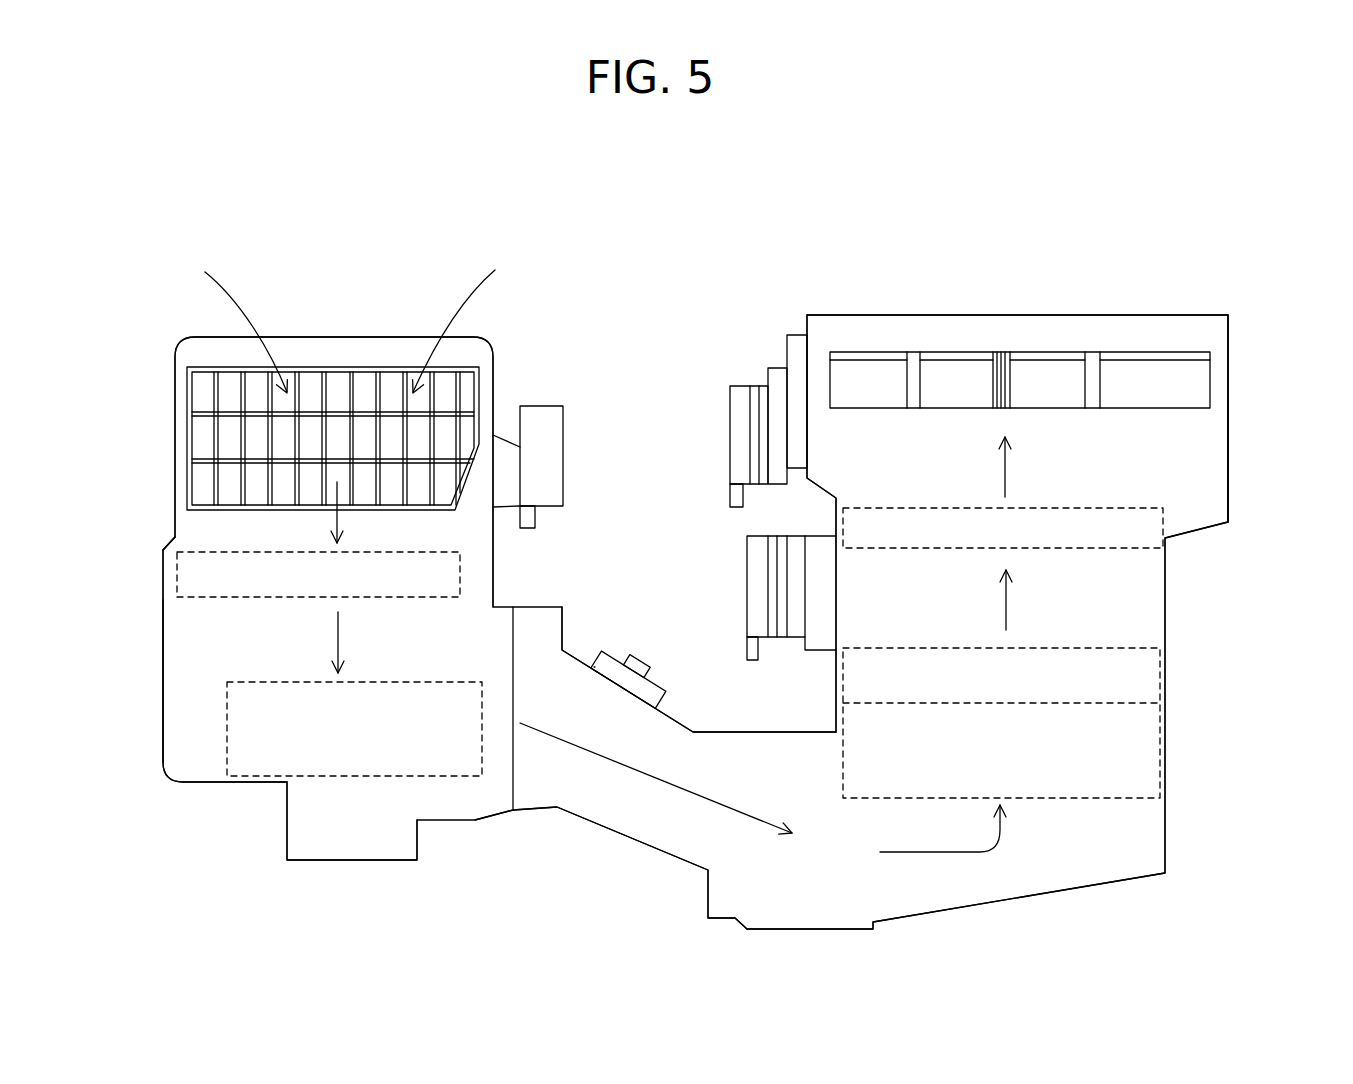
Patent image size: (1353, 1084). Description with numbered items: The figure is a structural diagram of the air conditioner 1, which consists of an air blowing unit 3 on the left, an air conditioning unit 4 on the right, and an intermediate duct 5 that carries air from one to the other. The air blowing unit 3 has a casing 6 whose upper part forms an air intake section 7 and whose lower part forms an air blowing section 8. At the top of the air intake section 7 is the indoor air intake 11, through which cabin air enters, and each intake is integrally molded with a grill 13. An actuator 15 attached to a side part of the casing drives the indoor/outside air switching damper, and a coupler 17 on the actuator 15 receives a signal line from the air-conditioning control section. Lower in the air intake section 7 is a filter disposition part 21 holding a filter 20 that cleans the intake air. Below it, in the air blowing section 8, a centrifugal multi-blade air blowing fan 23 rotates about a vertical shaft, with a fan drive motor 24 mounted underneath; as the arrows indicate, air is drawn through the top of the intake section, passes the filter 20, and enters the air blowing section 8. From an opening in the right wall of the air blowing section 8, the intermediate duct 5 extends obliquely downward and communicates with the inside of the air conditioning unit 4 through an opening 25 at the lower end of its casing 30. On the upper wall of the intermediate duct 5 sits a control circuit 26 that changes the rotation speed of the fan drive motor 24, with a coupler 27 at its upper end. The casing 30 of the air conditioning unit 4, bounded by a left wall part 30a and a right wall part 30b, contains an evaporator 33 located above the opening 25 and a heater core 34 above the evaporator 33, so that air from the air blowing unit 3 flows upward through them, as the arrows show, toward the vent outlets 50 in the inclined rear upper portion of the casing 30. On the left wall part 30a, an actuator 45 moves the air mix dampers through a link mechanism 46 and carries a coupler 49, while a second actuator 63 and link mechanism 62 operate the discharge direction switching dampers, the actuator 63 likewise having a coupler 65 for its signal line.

The air conditioner 1 is at (643, 160).
The air blowing unit 3 is at (108, 623).
The air conditioning unit 4 is at (1017, 356).
The intermediate duct 5 is at (580, 817).
The casing 6 is at (292, 466).
The air intake section 7 is at (144, 523).
The air blowing section 8 is at (192, 691).
The indoor air intake 11 is at (467, 392).
The grill 13 is at (302, 402).
The actuator 15 is at (542, 418).
The coupler 17 is at (530, 520).
The filter 20 is at (460, 570).
The filter disposition part 21 is at (190, 577).
The air blowing fan 23 is at (227, 745).
The fan drive motor 24 is at (288, 832).
The opening 25 is at (828, 735).
The control circuit 26 is at (598, 663).
The coupler 27 is at (643, 642).
The casing 30 is at (987, 576).
The left wall part 30a is at (768, 380).
The right wall part 30b is at (1228, 442).
The evaporator 33 is at (1122, 798).
The heater core 34 is at (1130, 548).
The actuator 45 is at (747, 555).
The link mechanism 46 is at (817, 640).
The coupler 49 is at (755, 648).
The vent outlet 50 is at (833, 390).
The link mechanism 62 is at (787, 343).
The actuator 63 is at (730, 405).
The coupler 65 is at (730, 493).